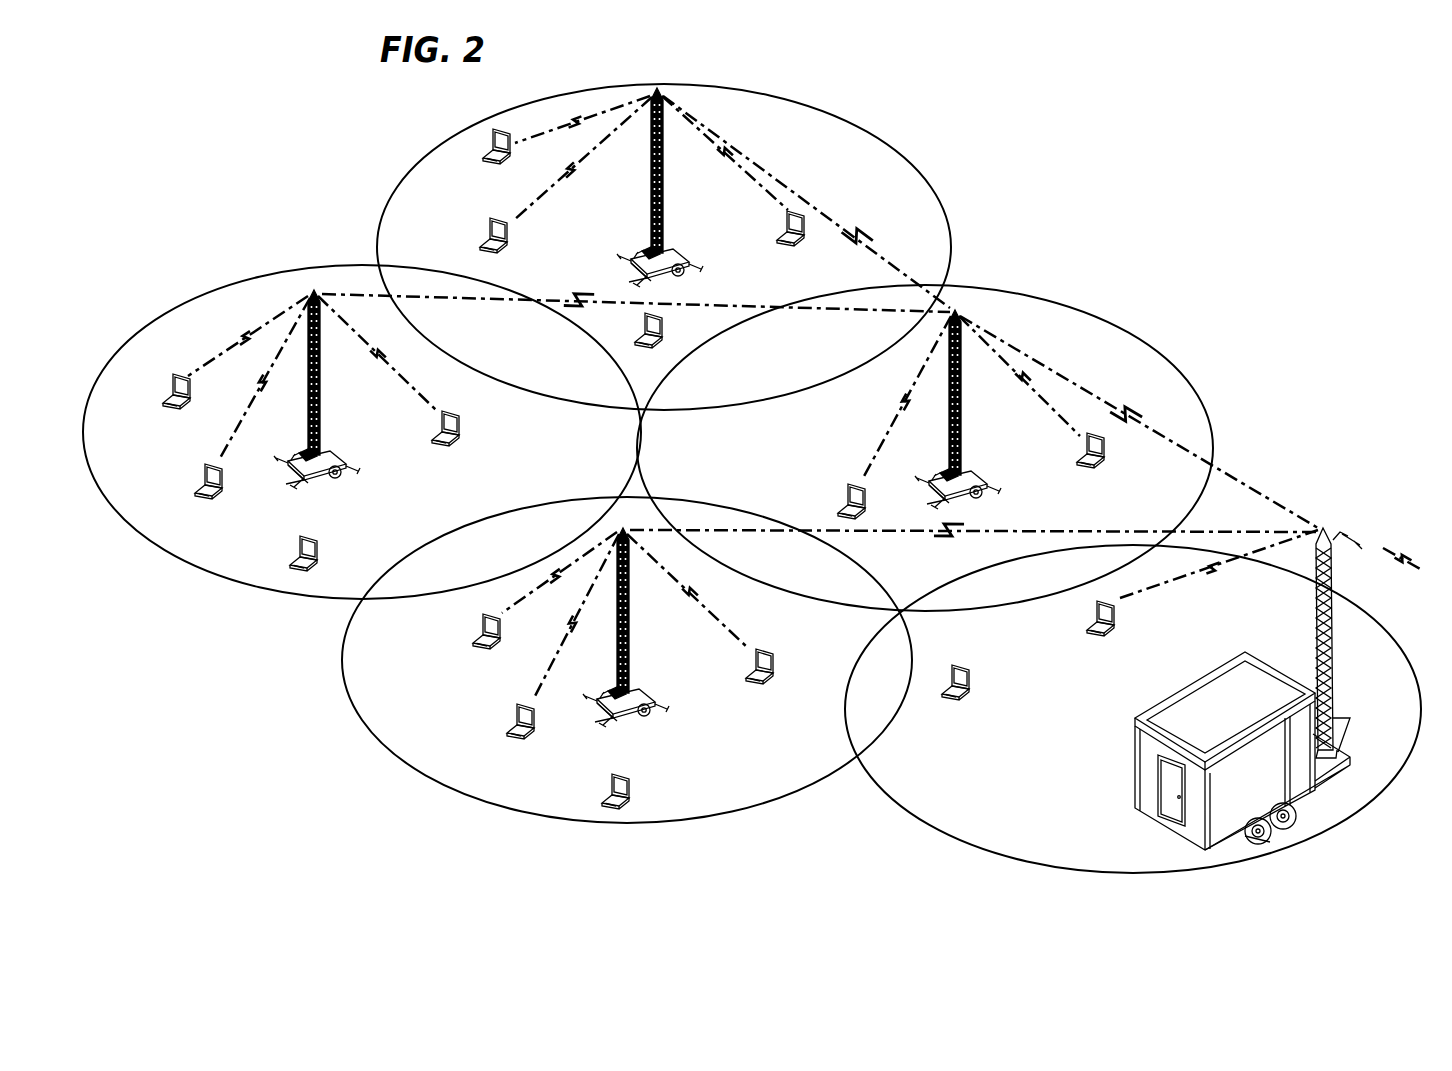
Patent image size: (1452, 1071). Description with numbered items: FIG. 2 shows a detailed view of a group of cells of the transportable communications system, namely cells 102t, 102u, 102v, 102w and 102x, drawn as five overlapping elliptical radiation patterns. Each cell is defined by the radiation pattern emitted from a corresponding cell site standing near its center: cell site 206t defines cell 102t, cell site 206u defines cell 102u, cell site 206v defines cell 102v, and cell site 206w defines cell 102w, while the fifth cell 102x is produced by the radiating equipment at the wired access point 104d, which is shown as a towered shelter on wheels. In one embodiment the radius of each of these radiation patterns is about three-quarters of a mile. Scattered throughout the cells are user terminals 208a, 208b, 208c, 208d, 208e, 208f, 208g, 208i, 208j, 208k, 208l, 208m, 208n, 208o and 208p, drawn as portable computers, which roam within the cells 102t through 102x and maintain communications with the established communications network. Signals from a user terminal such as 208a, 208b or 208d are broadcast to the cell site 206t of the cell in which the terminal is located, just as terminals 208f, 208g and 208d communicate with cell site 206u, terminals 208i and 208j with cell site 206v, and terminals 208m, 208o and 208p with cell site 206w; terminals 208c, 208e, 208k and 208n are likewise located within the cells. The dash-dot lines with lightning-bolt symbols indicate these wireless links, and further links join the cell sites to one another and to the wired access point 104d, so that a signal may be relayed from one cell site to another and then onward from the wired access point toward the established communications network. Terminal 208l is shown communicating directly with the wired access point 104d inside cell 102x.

The cell 102t is at (205, 296).
The cell 102u is at (400, 190).
The cell 102v is at (1137, 338).
The cell 102w is at (396, 752).
The cell 102x is at (1392, 633).
The cell site 206t is at (321, 374).
The cell site 206u is at (664, 173).
The cell site 206v is at (962, 394).
The cell site 206w is at (630, 610).
The user terminal 208a is at (170, 411).
The user terminal 208b is at (203, 500).
The user terminal 208c is at (319, 549).
The user terminal 208d is at (786, 247).
The user terminal 208e is at (664, 322).
The user terminal 208f is at (512, 232).
The user terminal 208g is at (488, 163).
The user terminal 208i is at (841, 495).
The user terminal 208j is at (1086, 469).
The user terminal 208k is at (948, 702).
The user terminal 208l is at (1096, 638).
The user terminal 208m is at (752, 686).
The user terminal 208n is at (631, 785).
The user terminal 208o is at (514, 741).
The user terminal 208p is at (483, 650).
The wired access point 104d is at (1134, 771).